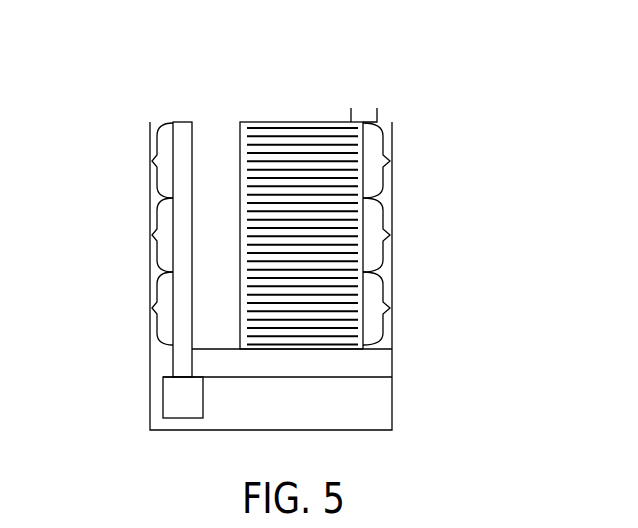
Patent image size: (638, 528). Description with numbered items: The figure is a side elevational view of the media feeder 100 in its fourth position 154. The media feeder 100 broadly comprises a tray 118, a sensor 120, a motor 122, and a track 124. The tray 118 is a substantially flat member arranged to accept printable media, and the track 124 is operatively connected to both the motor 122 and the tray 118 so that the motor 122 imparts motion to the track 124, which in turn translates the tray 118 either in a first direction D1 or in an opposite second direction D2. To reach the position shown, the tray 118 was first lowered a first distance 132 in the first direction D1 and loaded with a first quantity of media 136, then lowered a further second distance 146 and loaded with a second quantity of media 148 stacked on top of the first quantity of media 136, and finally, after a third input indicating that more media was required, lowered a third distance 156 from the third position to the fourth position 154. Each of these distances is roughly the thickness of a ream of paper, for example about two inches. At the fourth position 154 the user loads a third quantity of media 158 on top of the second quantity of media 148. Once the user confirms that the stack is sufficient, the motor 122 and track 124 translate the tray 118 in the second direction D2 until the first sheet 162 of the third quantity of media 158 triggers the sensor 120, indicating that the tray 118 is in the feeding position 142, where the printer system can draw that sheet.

The media feeder 100 is at (522, 277).
The tray 118 is at (380, 363).
The sensor 120 is at (365, 113).
The motor 122 is at (172, 418).
The track 124 is at (182, 122).
The first distance 132 is at (152, 161).
The first quantity of media 136 is at (390, 308).
The feeding position 142 is at (430, 380).
The second distance 146 is at (152, 235).
The second quantity of media 148 is at (390, 235).
The fourth position 154 is at (432, 407).
The third distance 156 is at (152, 308).
The third quantity of media 158 is at (390, 161).
The first sheet of third quantity of media 162 is at (268, 122).
The first direction D1 is at (73, 50).
The second direction D2 is at (50, 127).